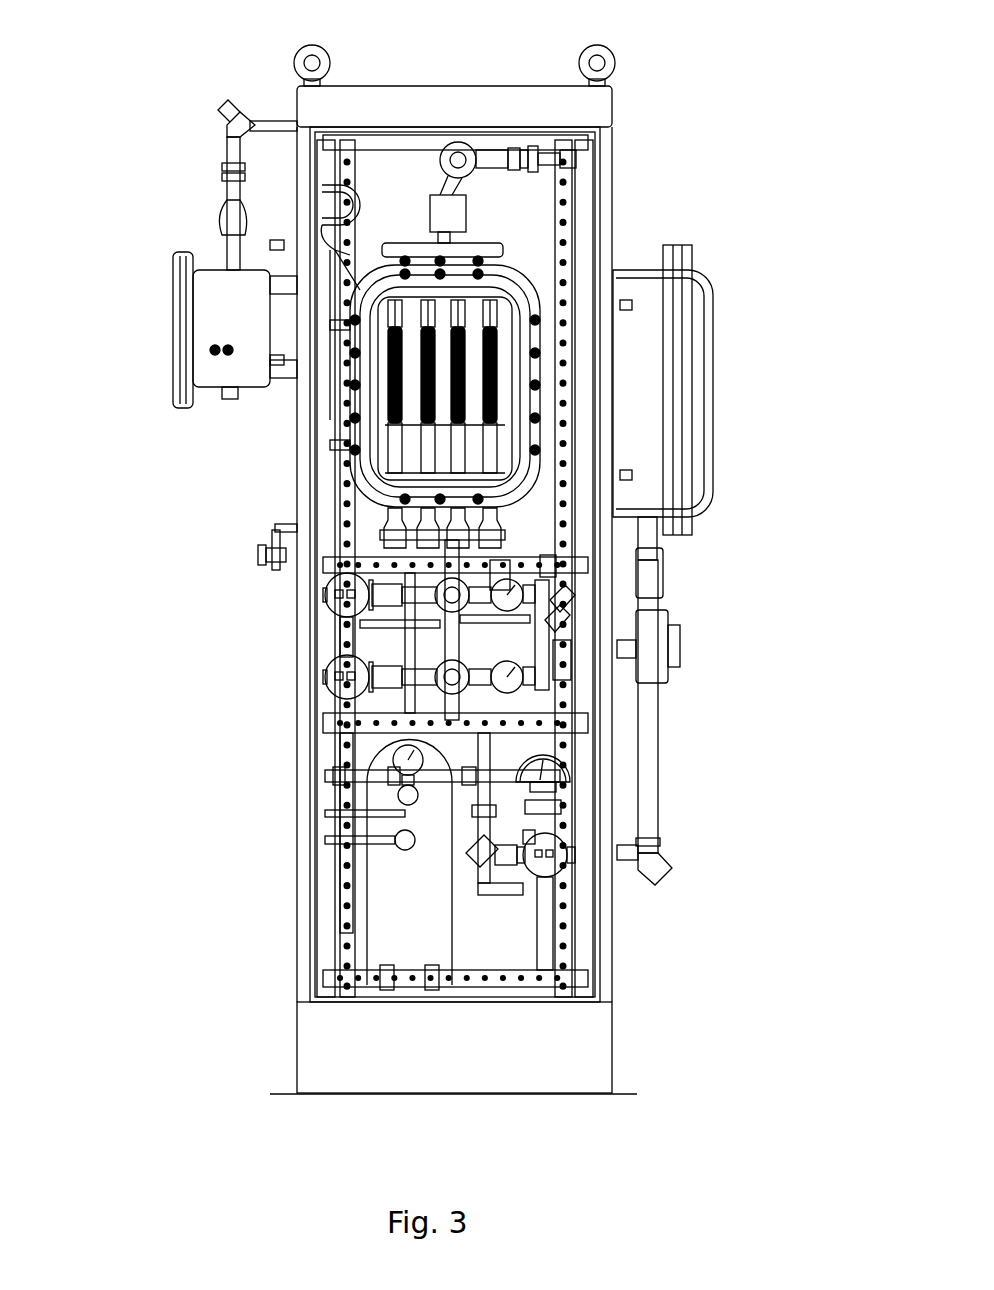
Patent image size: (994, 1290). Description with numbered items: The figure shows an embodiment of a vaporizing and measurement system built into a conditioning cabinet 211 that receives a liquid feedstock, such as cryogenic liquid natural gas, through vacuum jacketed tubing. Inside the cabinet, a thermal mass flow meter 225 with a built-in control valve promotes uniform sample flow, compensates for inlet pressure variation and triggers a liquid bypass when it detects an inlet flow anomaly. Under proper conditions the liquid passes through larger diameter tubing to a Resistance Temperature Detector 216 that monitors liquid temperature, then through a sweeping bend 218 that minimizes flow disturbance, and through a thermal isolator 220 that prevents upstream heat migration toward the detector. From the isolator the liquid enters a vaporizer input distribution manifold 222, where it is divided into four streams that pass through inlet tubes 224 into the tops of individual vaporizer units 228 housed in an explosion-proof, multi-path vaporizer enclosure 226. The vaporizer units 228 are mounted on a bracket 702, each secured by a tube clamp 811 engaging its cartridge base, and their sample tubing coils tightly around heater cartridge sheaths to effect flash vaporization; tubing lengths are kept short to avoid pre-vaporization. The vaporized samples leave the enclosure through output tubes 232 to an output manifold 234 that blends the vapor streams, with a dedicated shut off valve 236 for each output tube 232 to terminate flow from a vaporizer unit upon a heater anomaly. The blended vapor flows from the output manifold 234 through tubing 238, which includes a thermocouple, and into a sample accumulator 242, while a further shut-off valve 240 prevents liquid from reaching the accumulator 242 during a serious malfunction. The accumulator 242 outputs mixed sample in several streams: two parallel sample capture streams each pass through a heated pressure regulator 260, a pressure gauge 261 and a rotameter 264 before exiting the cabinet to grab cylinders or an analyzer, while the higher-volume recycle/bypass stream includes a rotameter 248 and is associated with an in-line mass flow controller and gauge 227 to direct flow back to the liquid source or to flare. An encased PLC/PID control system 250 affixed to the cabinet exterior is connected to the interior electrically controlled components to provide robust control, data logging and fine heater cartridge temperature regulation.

The conditioning cabinet 211 is at (495, 927).
The Resistance Temperature Detector 216 is at (568, 152).
The sweeping bend 218 is at (443, 150).
The thermal isolator 220 is at (462, 207).
The vaporizer input distribution manifold 222 is at (502, 248).
The inlet tubes 224 is at (385, 262).
The thermal mass flow meter 225 is at (175, 323).
The multi-path vaporizer enclosure 226 is at (345, 300).
The gauge 227 is at (578, 777).
The vaporizer units 228 is at (383, 377).
The output tubes 232 is at (497, 516).
The output manifold 234 is at (395, 514).
The shut off valve 236 is at (500, 540).
The tubing 238 is at (292, 555).
The shut-off valve 240 is at (330, 622).
The sample accumulator 242 is at (380, 905).
The rotameter 248 is at (568, 700).
The PLC/PID control system 250 is at (718, 388).
The heated pressure regulator 260 is at (325, 679).
The pressure gauge 261 is at (570, 683).
The rotameter 264 is at (560, 592).
The bracket 702 is at (540, 444).
The tube clamp 811 is at (358, 432).